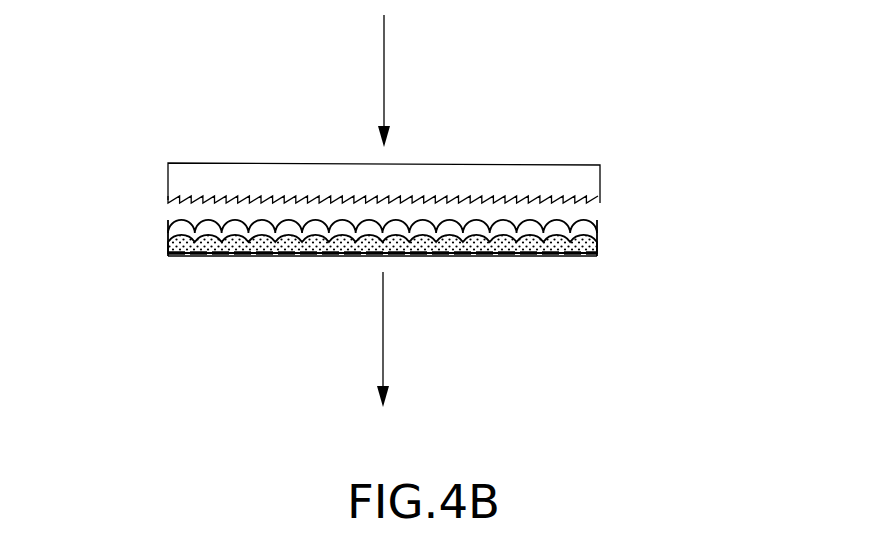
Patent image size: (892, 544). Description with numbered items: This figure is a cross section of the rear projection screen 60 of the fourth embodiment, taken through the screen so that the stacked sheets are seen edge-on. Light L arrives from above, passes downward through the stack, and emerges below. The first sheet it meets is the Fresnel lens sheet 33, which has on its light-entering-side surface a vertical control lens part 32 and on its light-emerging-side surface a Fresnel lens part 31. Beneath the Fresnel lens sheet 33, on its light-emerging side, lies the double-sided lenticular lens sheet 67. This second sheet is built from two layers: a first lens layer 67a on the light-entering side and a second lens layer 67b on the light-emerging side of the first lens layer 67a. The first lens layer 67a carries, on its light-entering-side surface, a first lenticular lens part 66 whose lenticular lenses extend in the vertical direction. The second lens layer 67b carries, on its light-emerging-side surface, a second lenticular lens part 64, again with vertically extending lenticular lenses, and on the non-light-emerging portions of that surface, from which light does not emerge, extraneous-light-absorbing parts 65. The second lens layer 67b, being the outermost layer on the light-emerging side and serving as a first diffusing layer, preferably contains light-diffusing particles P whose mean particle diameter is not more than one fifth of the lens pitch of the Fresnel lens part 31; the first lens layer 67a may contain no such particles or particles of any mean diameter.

The rear projection screen 60 is at (603, 115).
The Fresnel lens sheet 33 is at (703, 153).
The vertical control lens part 32 is at (587, 163).
The Fresnel lens part 31 is at (582, 212).
The double-sided lenticular lens sheet 67 is at (703, 235).
The first lens layer 67a is at (165, 235).
The second lens layer 67b is at (165, 237).
The first lenticular lens part 66 is at (590, 222).
The second lenticular lens part 64 is at (592, 256).
The extraneous-light-absorbing parts 65 is at (572, 256).
The light L is at (382, 60).
The light-diffusing particles P is at (405, 257).